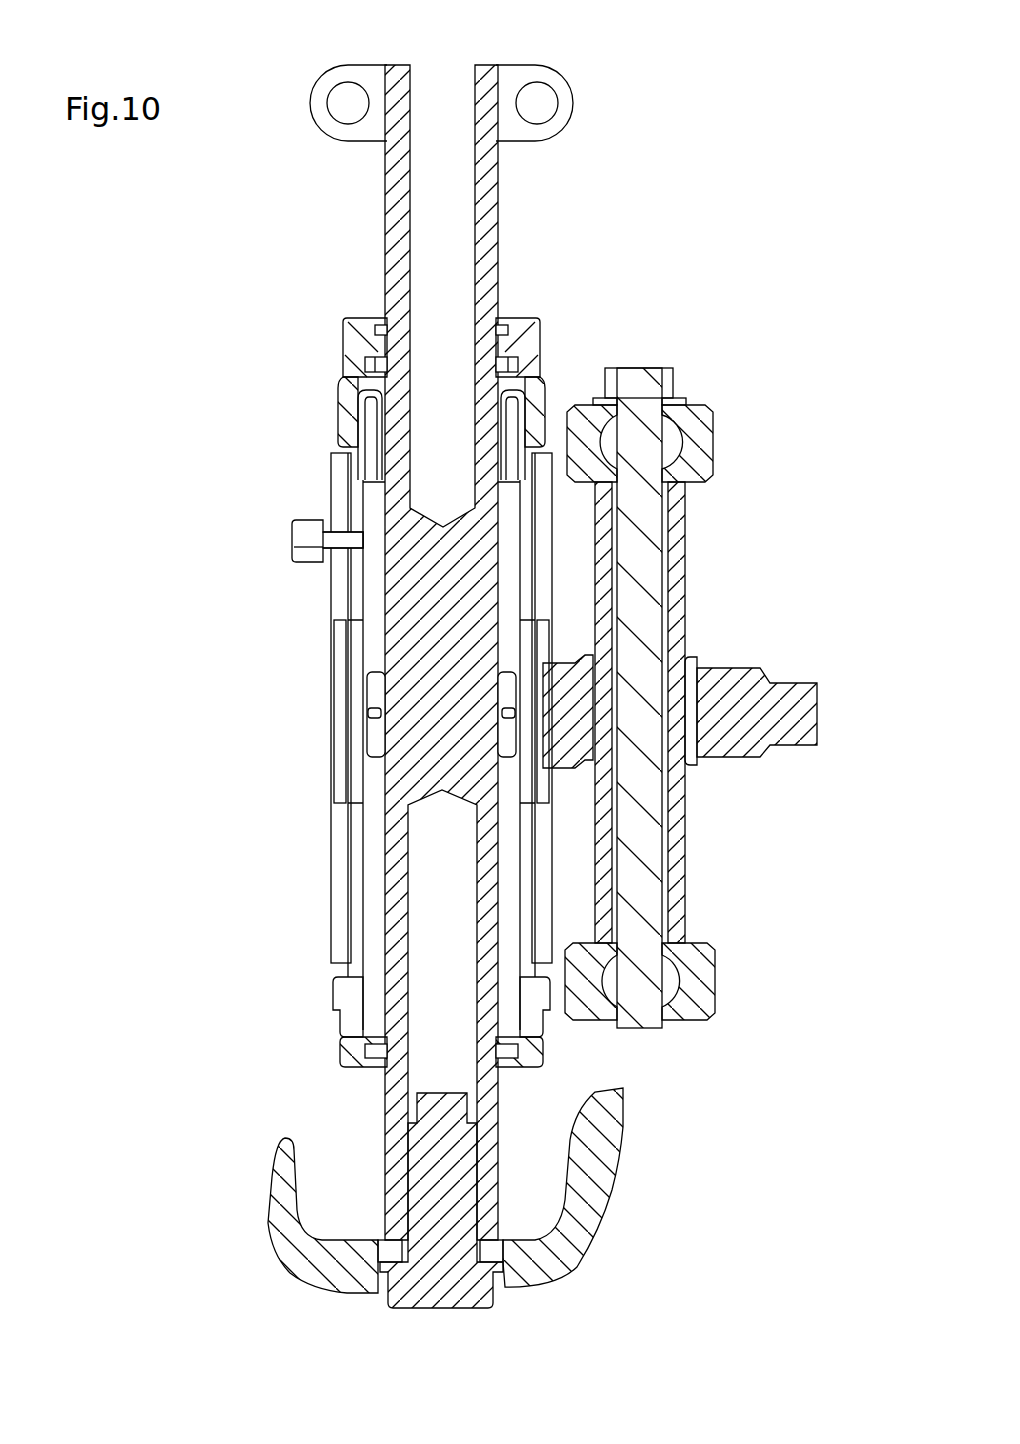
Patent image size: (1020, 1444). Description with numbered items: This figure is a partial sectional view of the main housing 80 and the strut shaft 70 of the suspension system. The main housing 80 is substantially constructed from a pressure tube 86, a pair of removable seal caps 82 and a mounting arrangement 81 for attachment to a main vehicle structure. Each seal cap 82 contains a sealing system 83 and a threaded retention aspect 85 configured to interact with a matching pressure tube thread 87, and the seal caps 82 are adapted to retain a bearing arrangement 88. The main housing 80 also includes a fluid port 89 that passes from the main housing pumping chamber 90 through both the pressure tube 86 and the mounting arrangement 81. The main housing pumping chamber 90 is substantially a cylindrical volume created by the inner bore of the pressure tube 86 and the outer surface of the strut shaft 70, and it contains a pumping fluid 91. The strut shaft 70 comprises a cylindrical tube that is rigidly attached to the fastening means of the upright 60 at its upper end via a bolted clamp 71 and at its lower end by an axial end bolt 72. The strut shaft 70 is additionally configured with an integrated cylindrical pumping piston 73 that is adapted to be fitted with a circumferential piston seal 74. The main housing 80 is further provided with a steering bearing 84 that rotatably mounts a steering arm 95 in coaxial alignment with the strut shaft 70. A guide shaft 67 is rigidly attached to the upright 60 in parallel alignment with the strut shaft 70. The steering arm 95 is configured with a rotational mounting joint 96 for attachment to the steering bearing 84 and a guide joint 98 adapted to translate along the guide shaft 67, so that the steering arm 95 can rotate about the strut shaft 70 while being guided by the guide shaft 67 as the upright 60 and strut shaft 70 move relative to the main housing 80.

The upright 60 is at (593, 1190).
The guide shaft 67 is at (683, 548).
The strut shaft 70 is at (385, 270).
The bolted clamp 71 is at (555, 84).
The axial end bolt 72 is at (475, 1290).
The integrated cylindrical pumping piston 73 is at (377, 692).
The circumferential piston seal 74 is at (367, 718).
The main housing 80 is at (335, 713).
The mounting arrangement 81 is at (332, 478).
The seal caps 82 is at (526, 318).
The sealing system 83 is at (380, 363).
The steering bearing 84 is at (345, 763).
The threaded retention aspect 85 is at (340, 422).
The pressure tube 86 is at (357, 608).
The pressure tube thread 87 is at (535, 385).
The bearing arrangement 88 is at (370, 971).
The fluid port 89 is at (303, 543).
The main housing pumping chamber 90 is at (375, 578).
The pumping fluid 91 is at (373, 517).
The steering arm 95 is at (725, 680).
The rotational mounting joint 96 is at (347, 657).
The guide joint 98 is at (688, 762).